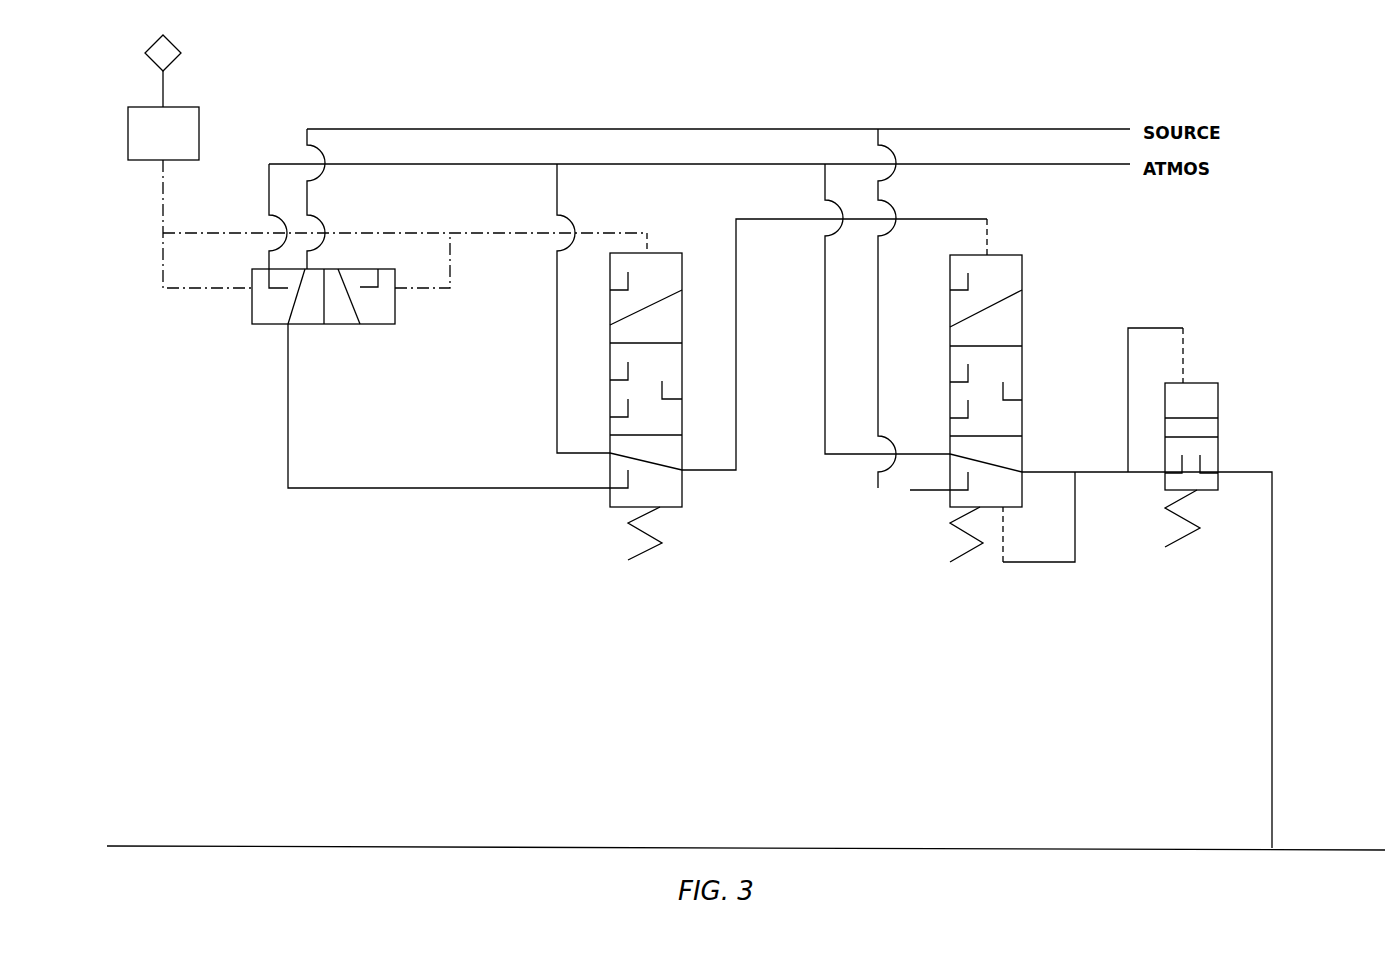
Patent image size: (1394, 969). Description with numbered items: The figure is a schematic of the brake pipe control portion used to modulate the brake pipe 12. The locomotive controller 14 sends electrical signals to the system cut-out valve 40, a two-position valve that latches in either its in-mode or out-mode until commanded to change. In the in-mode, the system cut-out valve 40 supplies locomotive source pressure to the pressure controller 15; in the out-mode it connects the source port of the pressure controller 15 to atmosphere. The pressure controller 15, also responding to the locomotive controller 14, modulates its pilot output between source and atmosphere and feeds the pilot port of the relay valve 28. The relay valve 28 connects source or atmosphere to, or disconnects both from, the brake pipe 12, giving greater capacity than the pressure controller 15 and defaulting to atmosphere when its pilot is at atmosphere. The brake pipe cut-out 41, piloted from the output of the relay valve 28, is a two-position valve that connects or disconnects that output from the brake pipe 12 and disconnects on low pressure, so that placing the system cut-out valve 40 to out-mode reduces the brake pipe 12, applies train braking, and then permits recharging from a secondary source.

The locomotive controller 14 is at (163, 97).
The system cut-out valve 40 is at (395, 305).
The pressure controller 15 is at (665, 253).
The relay valve 28 is at (1022, 272).
The brake pipe cut-out 41 is at (1218, 400).
The brake pipe 12 is at (746, 836).